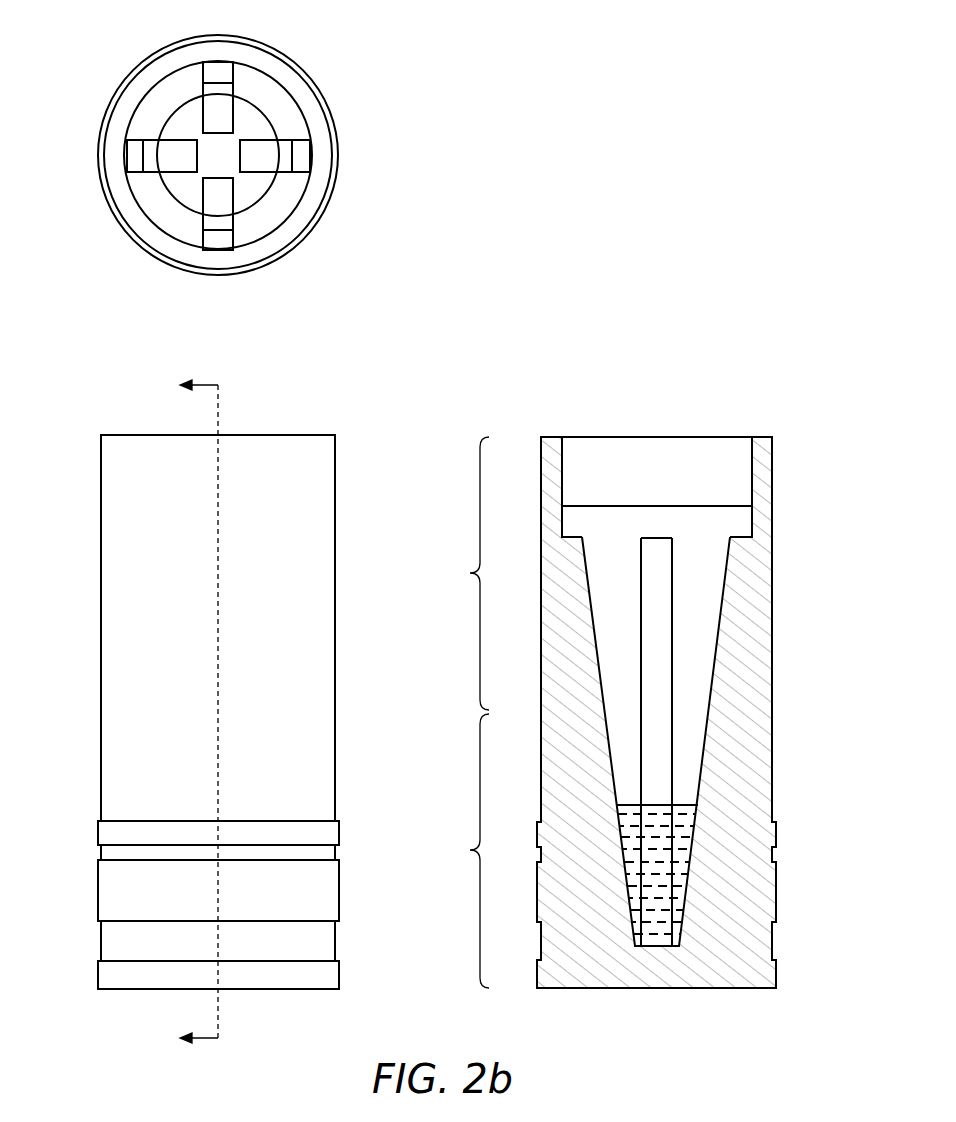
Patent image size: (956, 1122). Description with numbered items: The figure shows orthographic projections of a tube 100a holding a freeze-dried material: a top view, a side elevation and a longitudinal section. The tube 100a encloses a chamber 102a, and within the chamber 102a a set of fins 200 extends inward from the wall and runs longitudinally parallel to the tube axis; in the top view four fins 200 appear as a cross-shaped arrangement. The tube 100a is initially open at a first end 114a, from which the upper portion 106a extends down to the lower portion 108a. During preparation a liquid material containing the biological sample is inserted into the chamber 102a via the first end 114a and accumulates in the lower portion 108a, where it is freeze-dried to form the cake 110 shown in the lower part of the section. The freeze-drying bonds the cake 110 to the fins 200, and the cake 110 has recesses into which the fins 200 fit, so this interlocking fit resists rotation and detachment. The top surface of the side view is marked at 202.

The tube 100a is at (165, 47).
The chamber 102a is at (698, 555).
The upper portion 106a is at (453, 573).
The lower portion 108a is at (453, 851).
The cake 110 is at (679, 838).
The first end 114a is at (604, 437).
The fins 200 is at (165, 147).
The top surface 202 is at (125, 435).